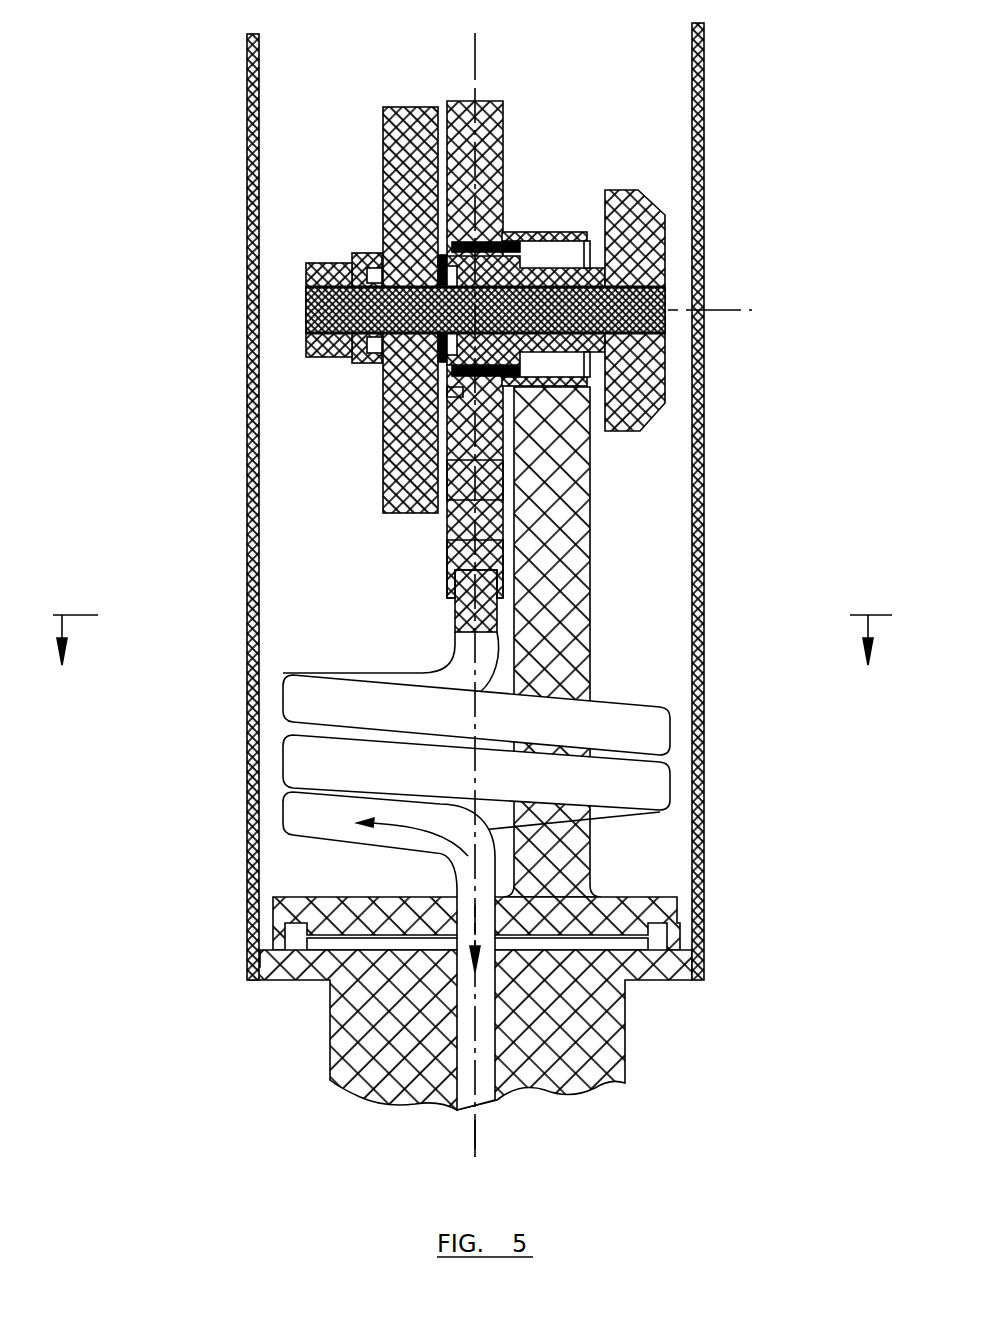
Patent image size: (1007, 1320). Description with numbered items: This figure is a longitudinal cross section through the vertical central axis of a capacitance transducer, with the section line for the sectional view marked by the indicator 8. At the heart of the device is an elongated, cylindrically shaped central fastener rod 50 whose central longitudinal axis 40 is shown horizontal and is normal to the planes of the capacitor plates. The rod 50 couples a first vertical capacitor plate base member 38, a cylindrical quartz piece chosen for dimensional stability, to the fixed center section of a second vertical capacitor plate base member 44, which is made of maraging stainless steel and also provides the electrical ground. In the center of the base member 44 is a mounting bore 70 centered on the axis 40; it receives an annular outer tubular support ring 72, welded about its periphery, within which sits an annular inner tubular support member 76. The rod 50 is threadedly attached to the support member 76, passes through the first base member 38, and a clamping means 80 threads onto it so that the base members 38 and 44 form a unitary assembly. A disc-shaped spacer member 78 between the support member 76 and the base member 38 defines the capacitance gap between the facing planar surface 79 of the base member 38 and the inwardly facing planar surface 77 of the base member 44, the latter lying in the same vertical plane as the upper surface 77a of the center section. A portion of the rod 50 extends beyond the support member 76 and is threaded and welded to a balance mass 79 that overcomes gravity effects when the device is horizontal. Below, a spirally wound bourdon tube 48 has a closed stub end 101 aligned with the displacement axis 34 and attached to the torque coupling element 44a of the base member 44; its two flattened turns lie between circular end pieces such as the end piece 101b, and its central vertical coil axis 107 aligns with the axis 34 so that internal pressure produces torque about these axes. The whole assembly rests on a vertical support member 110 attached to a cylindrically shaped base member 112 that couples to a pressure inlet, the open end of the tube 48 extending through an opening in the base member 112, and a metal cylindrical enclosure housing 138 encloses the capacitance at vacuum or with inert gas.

The displacement axis 34 is at (477, 40).
The mounting bore 70 is at (500, 236).
The outer tubular support ring 72 is at (518, 240).
The inner tubular support member 76 is at (542, 270).
The clamping means 80 is at (348, 249).
The spacer member 78 is at (434, 257).
The central longitudinal axis 40 is at (727, 310).
The central fastener rod 50 is at (305, 312).
The balance mass 79 is at (667, 388).
The upper surface of center section 77a is at (445, 362).
The inwardly facing planar surface 77 is at (450, 435).
The first capacitor plate base member 38 is at (428, 421).
The second capacitor plate base member 44 is at (493, 523).
The torque coupling element 44a is at (445, 548).
The vertical support member 110 is at (590, 583).
The closed stub end 101 is at (453, 620).
The circular end piece 101b is at (389, 951).
The spirally wound bourdon tube 48 is at (282, 762).
The cylindrical enclosure housing 138 is at (705, 832).
The cylindrically shaped base member 112 is at (648, 965).
The central vertical coil axis 107 is at (478, 1147).
The section line 8- 8 is at (472, 657).